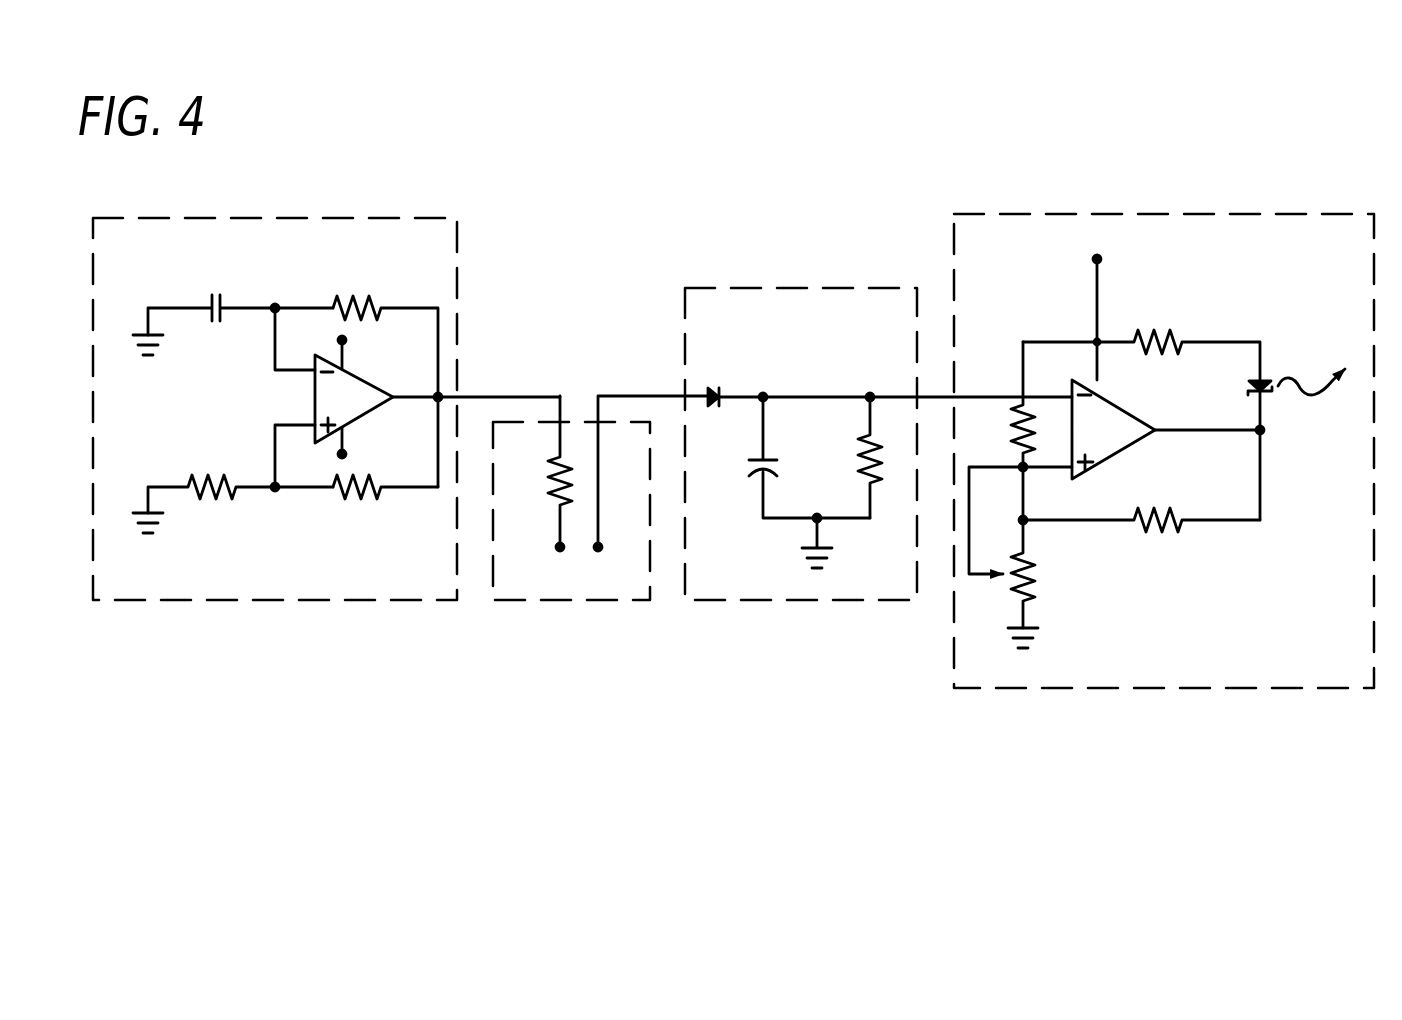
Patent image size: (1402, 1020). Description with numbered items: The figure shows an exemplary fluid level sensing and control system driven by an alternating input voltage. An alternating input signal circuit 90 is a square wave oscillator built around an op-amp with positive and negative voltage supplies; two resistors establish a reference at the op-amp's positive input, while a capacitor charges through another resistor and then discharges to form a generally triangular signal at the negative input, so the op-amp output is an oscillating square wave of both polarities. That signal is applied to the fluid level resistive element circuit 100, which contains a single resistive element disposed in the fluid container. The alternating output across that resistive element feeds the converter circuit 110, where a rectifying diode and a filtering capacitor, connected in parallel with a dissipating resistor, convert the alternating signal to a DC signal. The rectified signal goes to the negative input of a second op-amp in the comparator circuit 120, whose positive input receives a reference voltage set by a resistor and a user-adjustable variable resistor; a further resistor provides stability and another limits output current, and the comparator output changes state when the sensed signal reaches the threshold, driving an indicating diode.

The alternating input signal circuit 90 is at (270, 604).
The fluid level resistive element circuit 100 is at (558, 604).
The converter circuit 110 is at (798, 604).
The comparator circuit 120 is at (1153, 692).